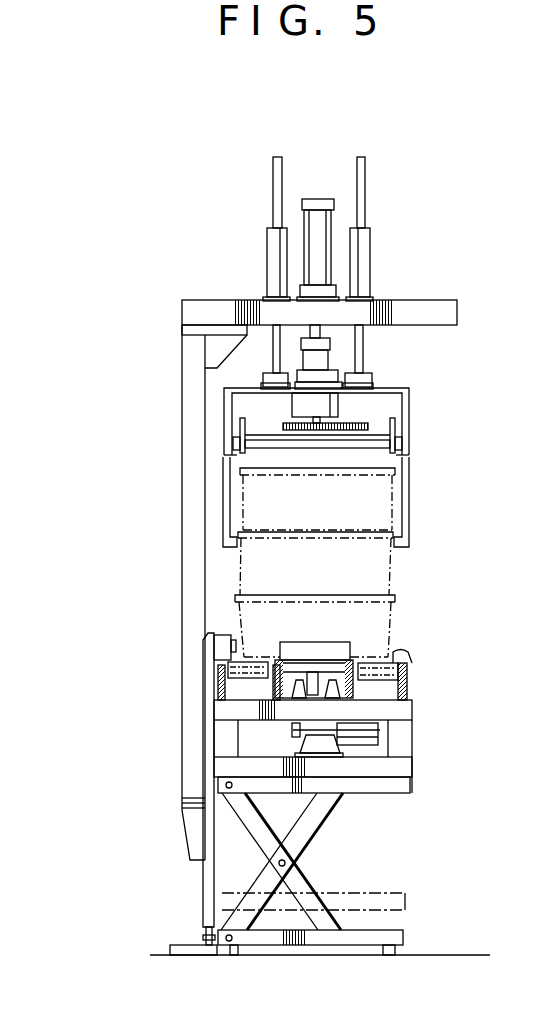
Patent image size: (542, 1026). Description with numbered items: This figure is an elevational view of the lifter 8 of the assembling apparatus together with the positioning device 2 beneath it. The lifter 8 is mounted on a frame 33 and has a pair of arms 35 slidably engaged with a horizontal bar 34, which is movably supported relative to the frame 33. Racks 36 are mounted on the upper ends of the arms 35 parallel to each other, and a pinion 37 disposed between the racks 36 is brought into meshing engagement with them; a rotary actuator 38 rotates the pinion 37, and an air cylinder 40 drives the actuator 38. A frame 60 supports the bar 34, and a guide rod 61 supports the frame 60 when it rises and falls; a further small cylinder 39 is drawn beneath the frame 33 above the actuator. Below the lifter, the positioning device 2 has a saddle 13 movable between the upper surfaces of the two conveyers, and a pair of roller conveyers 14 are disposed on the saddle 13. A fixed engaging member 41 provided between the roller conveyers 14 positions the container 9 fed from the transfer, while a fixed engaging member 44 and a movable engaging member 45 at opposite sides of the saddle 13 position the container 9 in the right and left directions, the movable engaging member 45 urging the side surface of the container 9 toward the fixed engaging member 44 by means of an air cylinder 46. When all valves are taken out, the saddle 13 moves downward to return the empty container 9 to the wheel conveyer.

The positioning device 2 is at (415, 798).
The lifter 8 is at (306, 442).
The container 9 is at (397, 470).
The saddle 13 is at (412, 747).
The roller conveyers 14 is at (247, 677).
The frame 33 is at (185, 313).
The horizontal bar 34 is at (360, 441).
The arms 35 is at (223, 507).
The racks 36 is at (263, 419).
The pinion 37 is at (318, 432).
The rotary actuator 38 is at (340, 406).
The auxiliary cylinder 39 is at (328, 358).
The air cylinder 40 is at (317, 198).
The fixed engaging member 41 is at (307, 642).
The fixed engaging member 44 is at (412, 660).
The movable engaging member 45 is at (236, 640).
The air cylinder 46 is at (220, 648).
The frame 60 is at (225, 404).
The guide rod 61 is at (273, 189).